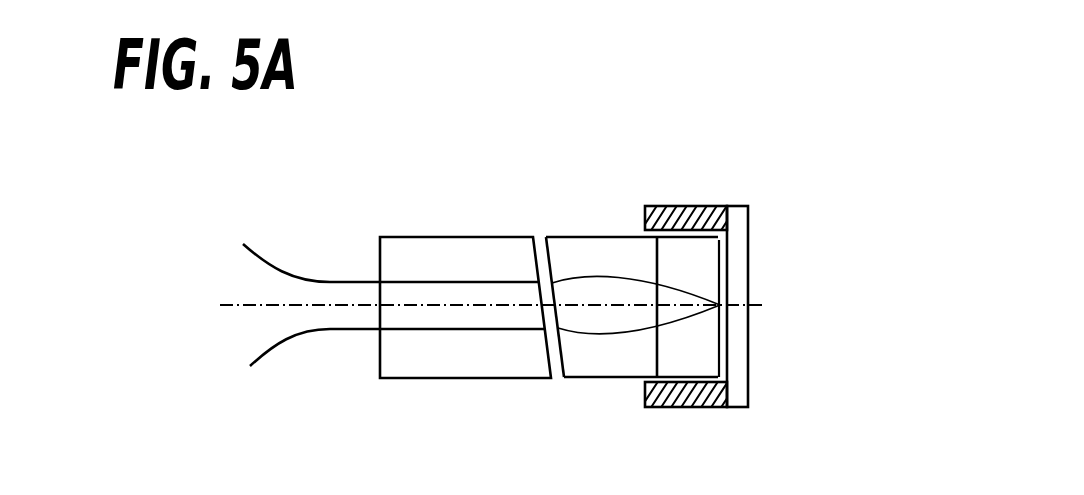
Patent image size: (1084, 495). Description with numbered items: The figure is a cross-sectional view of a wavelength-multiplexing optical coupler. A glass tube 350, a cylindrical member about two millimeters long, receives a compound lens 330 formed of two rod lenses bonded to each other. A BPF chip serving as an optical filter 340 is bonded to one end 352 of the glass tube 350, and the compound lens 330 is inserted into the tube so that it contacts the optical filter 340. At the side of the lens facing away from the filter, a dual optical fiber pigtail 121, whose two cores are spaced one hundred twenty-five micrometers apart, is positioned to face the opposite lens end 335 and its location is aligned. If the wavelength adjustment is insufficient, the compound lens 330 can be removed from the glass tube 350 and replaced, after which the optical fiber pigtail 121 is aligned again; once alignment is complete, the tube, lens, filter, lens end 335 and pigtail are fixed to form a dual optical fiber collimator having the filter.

The dual optical fiber pigtail 121 is at (417, 244).
The compound lens 330 is at (577, 244).
The first section (opposite lens end) 335 is at (558, 347).
The optical filter (BPF chip) 340 is at (748, 252).
The glass tube (cylindrical member) 350 is at (672, 210).
The end of glass tube 352 is at (727, 348).